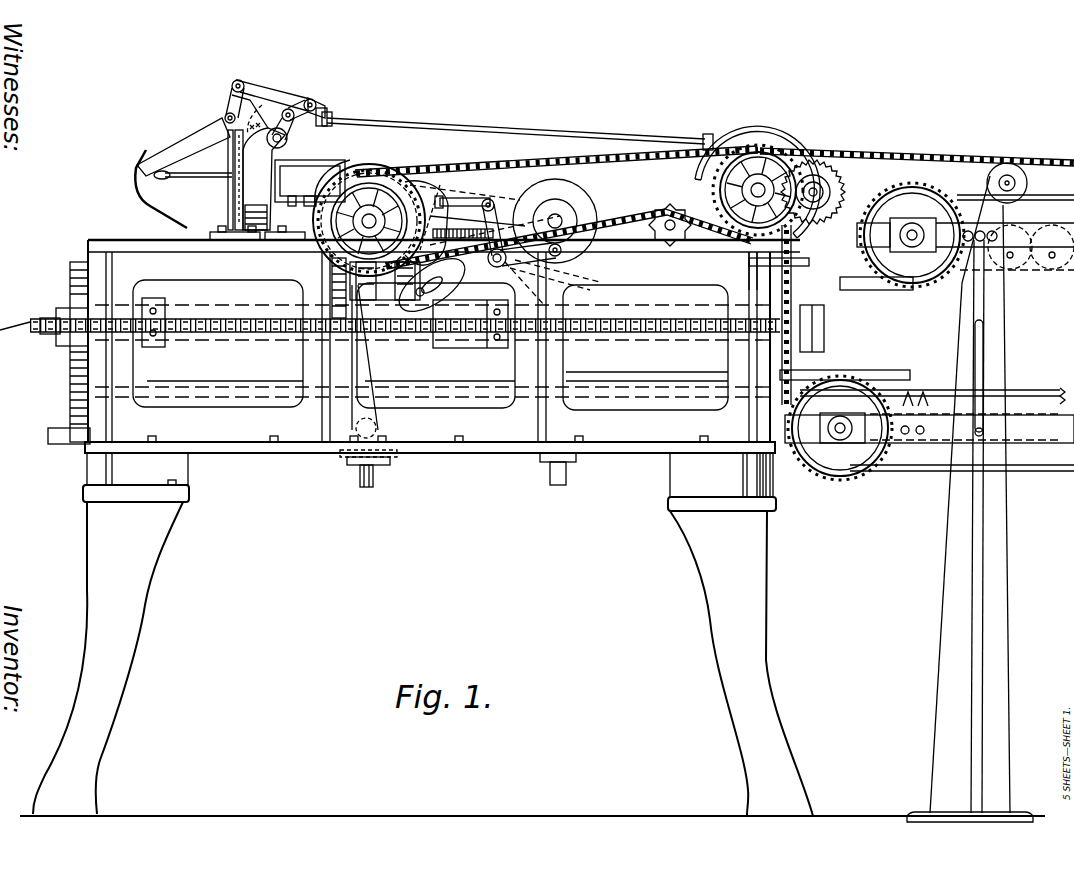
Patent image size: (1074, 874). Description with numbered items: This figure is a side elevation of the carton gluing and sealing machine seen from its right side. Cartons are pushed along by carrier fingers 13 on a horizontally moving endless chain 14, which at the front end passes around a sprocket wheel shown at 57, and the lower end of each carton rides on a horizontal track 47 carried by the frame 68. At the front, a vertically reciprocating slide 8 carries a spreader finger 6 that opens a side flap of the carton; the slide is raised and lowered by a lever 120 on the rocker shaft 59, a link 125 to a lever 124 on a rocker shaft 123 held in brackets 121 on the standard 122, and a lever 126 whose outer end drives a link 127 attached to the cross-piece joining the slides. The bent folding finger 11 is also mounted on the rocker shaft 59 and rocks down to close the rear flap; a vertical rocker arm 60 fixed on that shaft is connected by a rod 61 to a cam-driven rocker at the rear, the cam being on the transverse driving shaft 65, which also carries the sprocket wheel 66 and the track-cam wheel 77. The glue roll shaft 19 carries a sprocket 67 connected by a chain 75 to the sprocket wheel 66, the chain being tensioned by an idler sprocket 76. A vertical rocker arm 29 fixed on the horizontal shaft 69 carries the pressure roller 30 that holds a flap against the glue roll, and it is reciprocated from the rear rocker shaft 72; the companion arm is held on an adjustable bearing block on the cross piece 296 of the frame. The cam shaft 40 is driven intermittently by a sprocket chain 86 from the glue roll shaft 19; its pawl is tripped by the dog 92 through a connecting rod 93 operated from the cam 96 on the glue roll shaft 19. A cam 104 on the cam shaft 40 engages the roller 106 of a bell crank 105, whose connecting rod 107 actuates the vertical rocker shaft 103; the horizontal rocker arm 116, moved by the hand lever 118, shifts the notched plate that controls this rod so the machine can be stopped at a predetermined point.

The spreader finger 6 is at (228, 157).
The vertically reciprocating slide 8 is at (220, 122).
The bent folding finger 11 is at (148, 208).
The carrier finger 13 is at (153, 340).
The endless chain 14 is at (258, 332).
The glue roll shaft 19 is at (370, 220).
The vertical rocker arm 29 is at (365, 367).
The pressure roller 30 is at (350, 284).
The cam shaft 40 is at (565, 210).
The horizontal track 47 is at (612, 392).
The sprocket shaft 57 is at (80, 272).
The rocker shaft 59 is at (300, 128).
The vertical rocker arm 60 is at (280, 128).
The rod 61 is at (450, 128).
The driving shaft 65 is at (762, 188).
The sprocket wheel 66 is at (718, 174).
The sprocket 67 is at (442, 182).
The frame 68 is at (768, 269).
The horizontal shaft 69 is at (376, 431).
The horizontal rocker shaft 72 is at (728, 232).
The chain 75 is at (600, 142).
The idler sprocket 76 is at (656, 225).
The track-cam wheel 77 is at (766, 124).
The sprocket chain 86 is at (489, 199).
The dog or horizontal bell crank lever 92 is at (530, 200).
The connecting rod 93 is at (448, 197).
The cam 96 is at (352, 172).
The vertical rocker shaft 103 is at (352, 278).
The cam 104 is at (563, 248).
The bell crank 105 is at (532, 258).
The roller 106 is at (562, 256).
The connecting rod 107 is at (466, 195).
The horizontal rocker arm 116 is at (295, 204).
The hand lever 118 is at (178, 178).
The lever 120 is at (260, 118).
The bracket 121 is at (275, 110).
The standard 122 is at (258, 183).
The rocker shaft 123 is at (314, 98).
The lever 124 is at (293, 98).
The link 125 is at (256, 108).
The lever 126 is at (258, 92).
The link 127 is at (232, 95).
The cross piece 296 is at (375, 477).